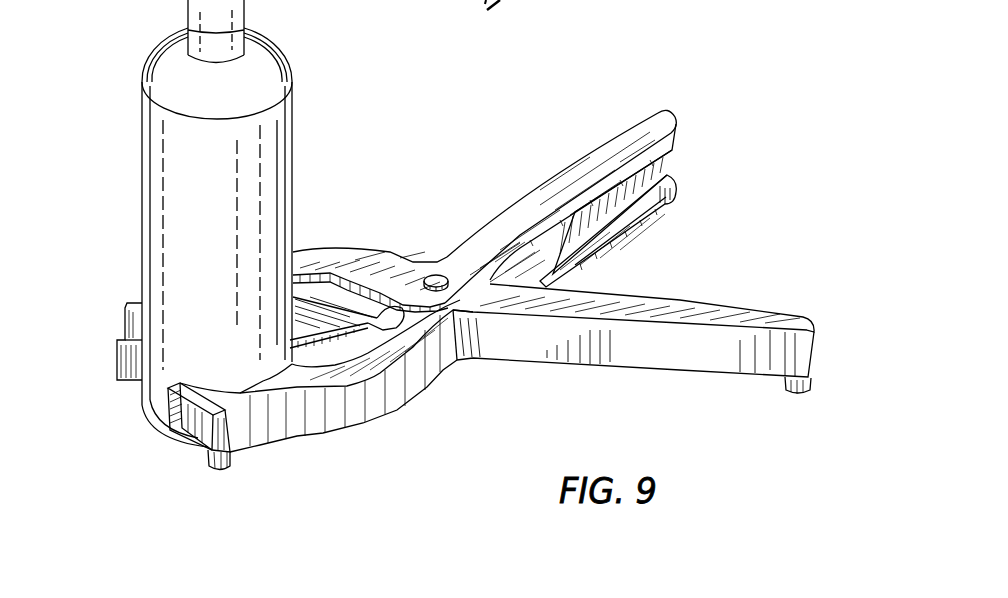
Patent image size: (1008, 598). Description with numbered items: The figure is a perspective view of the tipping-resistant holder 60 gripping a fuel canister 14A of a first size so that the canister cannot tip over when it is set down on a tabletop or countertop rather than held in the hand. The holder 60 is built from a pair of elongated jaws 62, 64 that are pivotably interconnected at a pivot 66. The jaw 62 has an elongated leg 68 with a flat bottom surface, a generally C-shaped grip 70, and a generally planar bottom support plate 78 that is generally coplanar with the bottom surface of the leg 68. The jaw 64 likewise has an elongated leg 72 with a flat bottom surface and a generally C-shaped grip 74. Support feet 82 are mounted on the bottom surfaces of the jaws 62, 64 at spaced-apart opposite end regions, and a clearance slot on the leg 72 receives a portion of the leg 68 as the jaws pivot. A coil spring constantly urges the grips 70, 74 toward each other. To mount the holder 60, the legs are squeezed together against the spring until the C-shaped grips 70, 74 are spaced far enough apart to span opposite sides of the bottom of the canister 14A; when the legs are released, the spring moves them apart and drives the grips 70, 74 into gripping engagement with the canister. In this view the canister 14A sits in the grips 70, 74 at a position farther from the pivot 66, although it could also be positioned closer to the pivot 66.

The canister 14A is at (160, 216).
The tipping-resistant holder 60 is at (447, 168).
The jaw 62 is at (506, 231).
The jaw 64 is at (632, 296).
The pivot 66 is at (437, 276).
The leg 68 is at (553, 200).
The C-shaped grip 70 is at (323, 260).
The leg 72 is at (587, 347).
The C-shaped grip 74 is at (363, 408).
The bottom support plate 78 is at (303, 328).
The support feet 82 is at (676, 198).